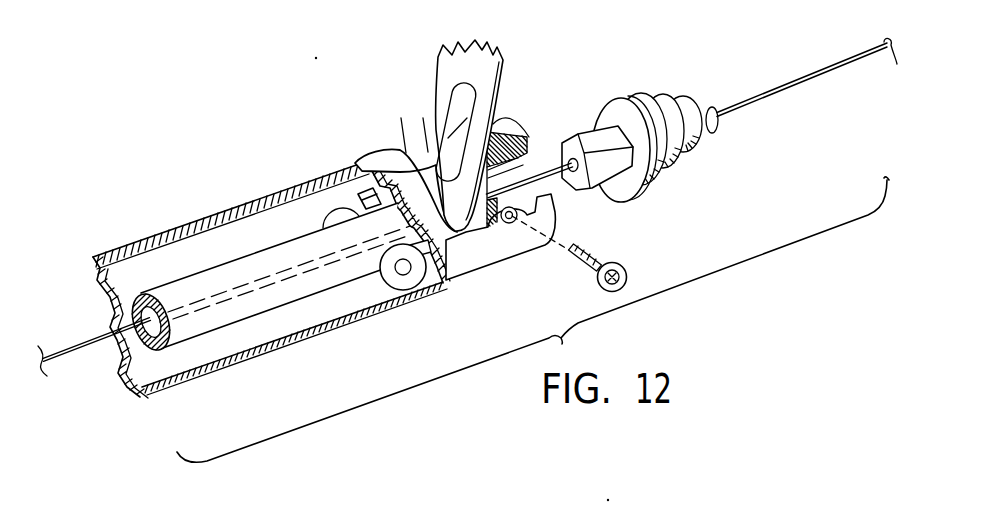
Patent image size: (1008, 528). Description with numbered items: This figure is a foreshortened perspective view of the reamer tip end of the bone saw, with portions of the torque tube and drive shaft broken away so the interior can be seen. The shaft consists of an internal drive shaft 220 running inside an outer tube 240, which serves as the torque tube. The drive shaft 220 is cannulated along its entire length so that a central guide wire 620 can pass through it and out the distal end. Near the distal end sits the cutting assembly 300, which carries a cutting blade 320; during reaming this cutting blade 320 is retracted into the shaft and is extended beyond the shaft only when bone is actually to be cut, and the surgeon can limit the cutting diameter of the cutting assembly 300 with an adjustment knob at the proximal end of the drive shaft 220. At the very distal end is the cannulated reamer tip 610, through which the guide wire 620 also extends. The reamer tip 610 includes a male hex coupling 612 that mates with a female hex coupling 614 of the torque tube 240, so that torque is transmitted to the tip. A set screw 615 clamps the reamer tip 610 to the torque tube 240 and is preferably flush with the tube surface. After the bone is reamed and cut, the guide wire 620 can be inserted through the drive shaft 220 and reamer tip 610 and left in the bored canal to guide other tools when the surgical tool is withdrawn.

The drive shaft 220 is at (231, 323).
The outer tube 240 is at (177, 385).
The cutting assembly 300 is at (516, 88).
The cutting blade 320 is at (432, 116).
The reamer tip 610 is at (684, 168).
The male hex coupling 612 is at (594, 188).
The female hex coupling 614 is at (515, 187).
The set screw 615 is at (578, 265).
The guide wire 620 is at (800, 78).